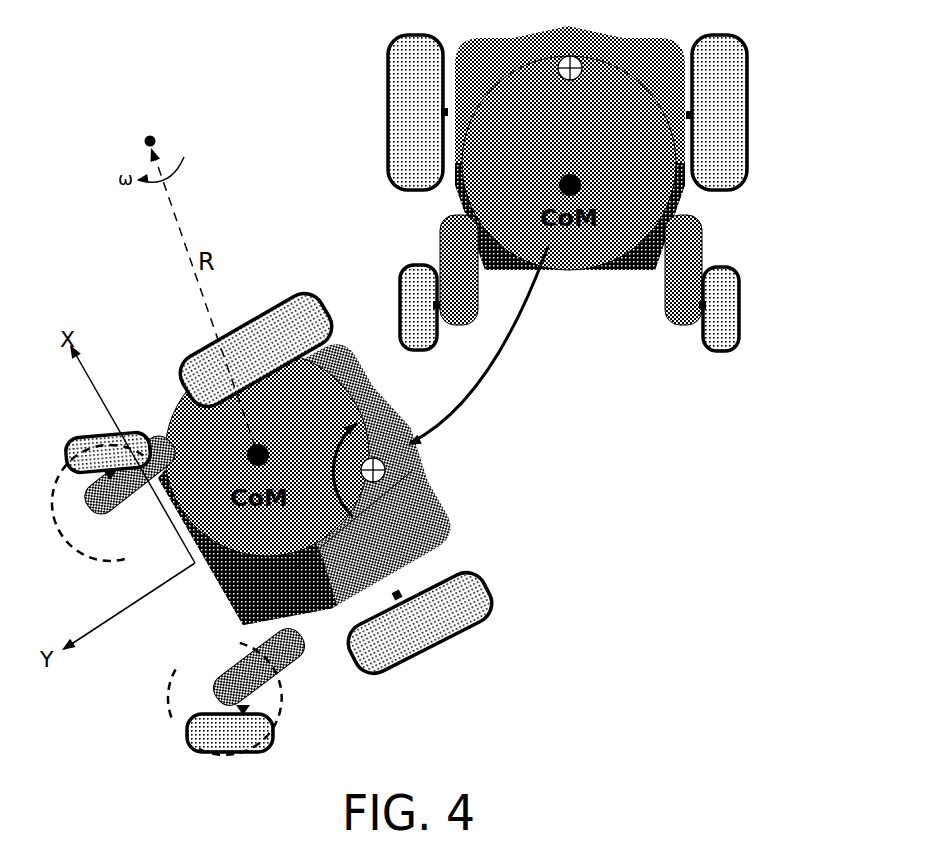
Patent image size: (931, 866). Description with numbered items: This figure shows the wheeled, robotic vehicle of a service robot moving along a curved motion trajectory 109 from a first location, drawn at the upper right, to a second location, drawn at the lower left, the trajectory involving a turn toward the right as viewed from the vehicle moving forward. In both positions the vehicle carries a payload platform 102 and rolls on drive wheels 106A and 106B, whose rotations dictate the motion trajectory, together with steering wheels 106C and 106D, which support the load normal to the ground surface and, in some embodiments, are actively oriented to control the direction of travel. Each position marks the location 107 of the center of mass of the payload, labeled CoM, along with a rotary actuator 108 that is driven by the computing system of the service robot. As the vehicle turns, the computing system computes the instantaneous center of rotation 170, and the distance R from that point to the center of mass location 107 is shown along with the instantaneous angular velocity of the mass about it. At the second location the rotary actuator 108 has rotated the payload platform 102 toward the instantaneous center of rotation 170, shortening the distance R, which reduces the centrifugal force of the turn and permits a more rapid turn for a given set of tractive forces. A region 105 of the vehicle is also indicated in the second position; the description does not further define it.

The payload platform 102 is at (589, 148).
The front platform section 105 is at (355, 518).
The drive wheel 106A is at (748, 92).
The drive wheel 106B is at (388, 108).
The steering wheel 106C is at (400, 282).
The steering wheel 106D is at (740, 302).
The location of the center of mass of the payload 107 is at (581, 183).
The rotary actuator 108 is at (385, 469).
The motion trajectory 109 is at (455, 412).
The instantaneous center of rotation 170 is at (145, 140).